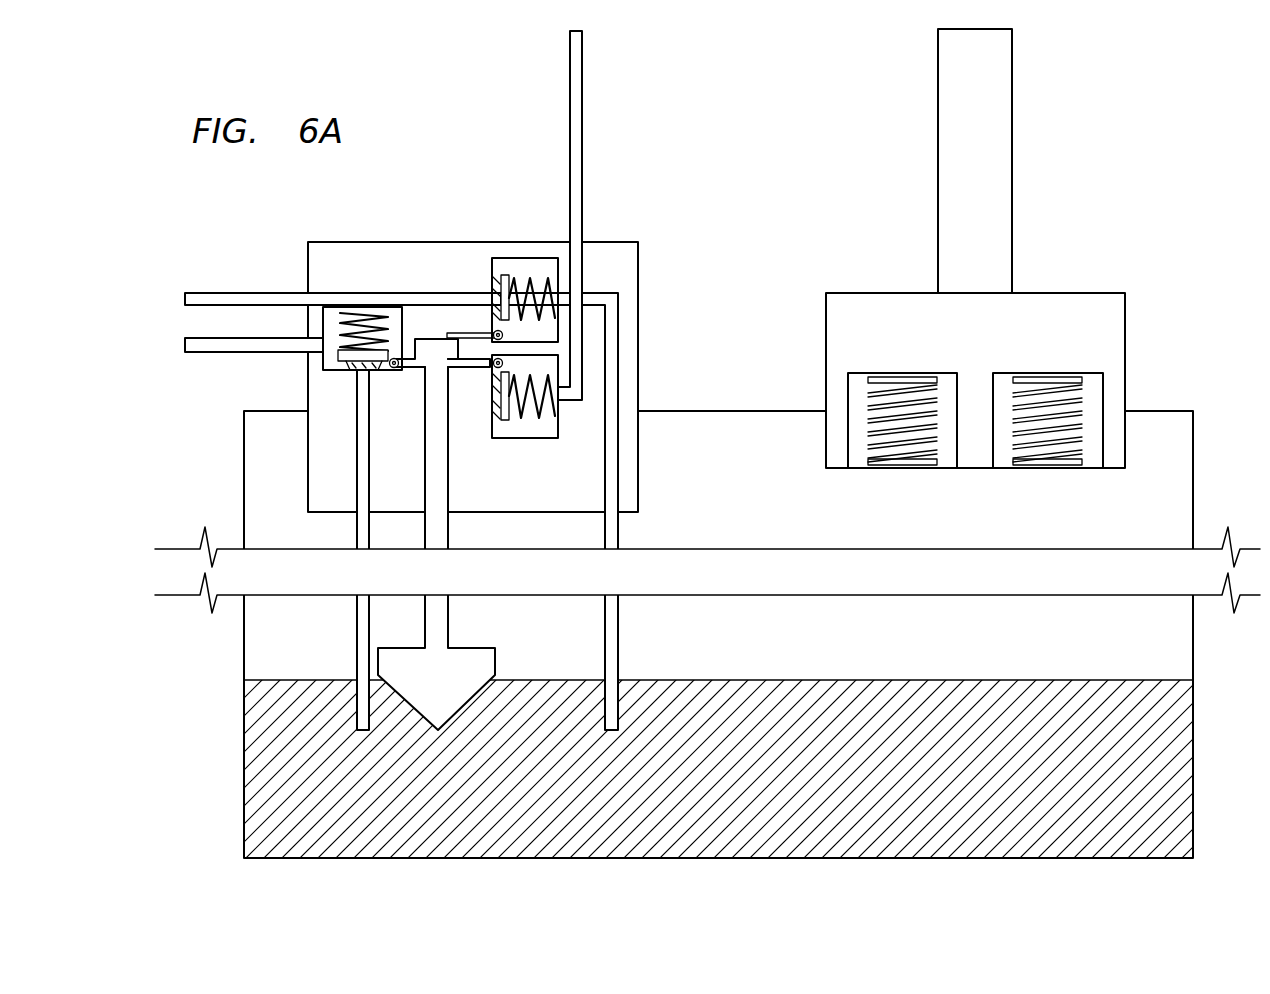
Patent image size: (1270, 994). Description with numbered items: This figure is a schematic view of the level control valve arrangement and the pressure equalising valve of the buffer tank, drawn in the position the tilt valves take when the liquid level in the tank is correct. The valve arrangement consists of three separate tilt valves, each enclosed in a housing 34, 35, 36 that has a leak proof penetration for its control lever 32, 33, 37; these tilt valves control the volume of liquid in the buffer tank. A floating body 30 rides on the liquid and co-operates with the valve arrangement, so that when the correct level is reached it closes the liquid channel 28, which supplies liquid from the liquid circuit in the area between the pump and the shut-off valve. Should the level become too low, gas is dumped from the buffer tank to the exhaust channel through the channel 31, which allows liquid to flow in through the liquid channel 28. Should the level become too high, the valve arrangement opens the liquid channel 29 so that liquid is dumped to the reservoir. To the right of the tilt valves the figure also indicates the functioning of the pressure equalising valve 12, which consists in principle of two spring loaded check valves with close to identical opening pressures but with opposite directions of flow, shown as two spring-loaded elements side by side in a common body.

The pressure equalising valve 12 is at (1058, 292).
The liquid channel 28 is at (205, 352).
The liquid channel 29 is at (227, 292).
The floating body 30 is at (435, 387).
The channel 31 is at (582, 165).
The control lever 32 is at (413, 337).
The control lever 33 is at (468, 357).
The housing 34 is at (323, 368).
The housing 35 is at (560, 437).
The housing 36 is at (533, 257).
The control lever 37 is at (482, 332).